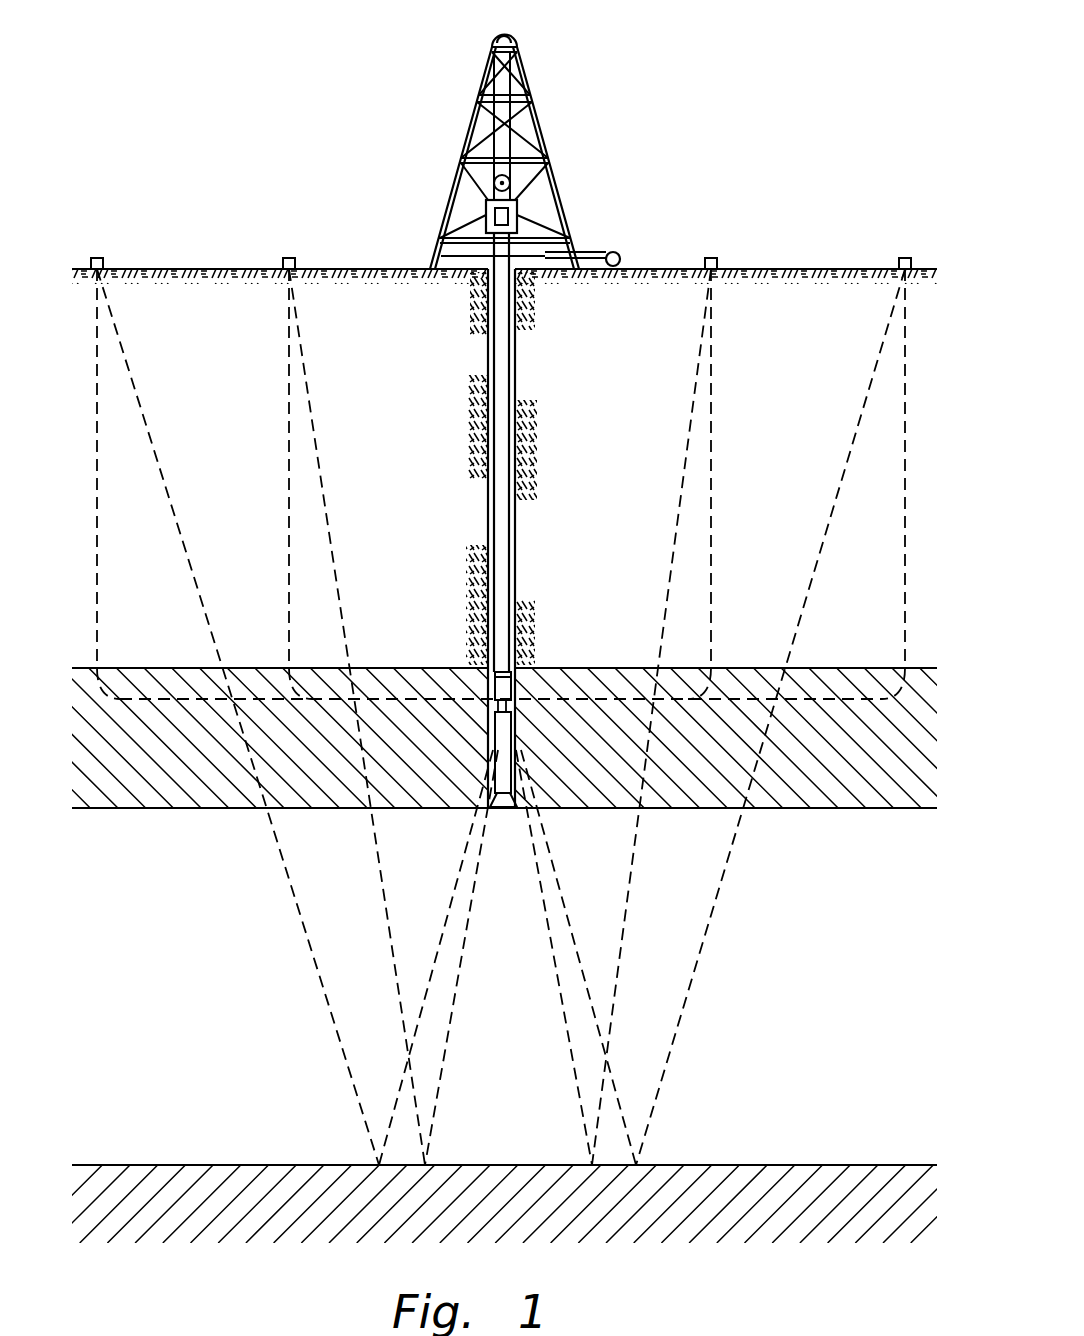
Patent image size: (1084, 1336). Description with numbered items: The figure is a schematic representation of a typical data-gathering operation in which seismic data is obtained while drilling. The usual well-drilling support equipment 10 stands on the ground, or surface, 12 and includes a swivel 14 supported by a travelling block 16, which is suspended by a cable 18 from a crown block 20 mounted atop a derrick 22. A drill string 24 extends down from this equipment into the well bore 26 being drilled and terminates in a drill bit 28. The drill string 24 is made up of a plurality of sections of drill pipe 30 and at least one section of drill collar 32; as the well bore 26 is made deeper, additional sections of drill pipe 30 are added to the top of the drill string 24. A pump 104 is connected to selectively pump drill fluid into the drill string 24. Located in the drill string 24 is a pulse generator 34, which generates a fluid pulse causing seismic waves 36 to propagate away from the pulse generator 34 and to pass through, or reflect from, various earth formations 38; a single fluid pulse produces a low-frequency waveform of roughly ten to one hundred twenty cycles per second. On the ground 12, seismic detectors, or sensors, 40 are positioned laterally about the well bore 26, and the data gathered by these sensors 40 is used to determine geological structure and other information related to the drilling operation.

The well-drilling support equipment 10 is at (530, 135).
The ground 12 is at (365, 269).
The swivel 14 is at (519, 222).
The travelling block 16 is at (492, 192).
The cable 18 is at (513, 130).
The crown block 20 is at (500, 38).
The derrick 22 is at (481, 89).
The drill string 24 is at (491, 257).
The well bore 26 is at (508, 353).
The drill bit 28 is at (502, 812).
The drill pipe 30 is at (512, 576).
The drill collar 32 is at (518, 782).
The pulse generator 34 is at (512, 690).
The seismic waves 36 is at (809, 582).
The earth formations 38 is at (121, 808).
The seismic detectors 40 is at (97, 257).
The pump 104 is at (615, 253).